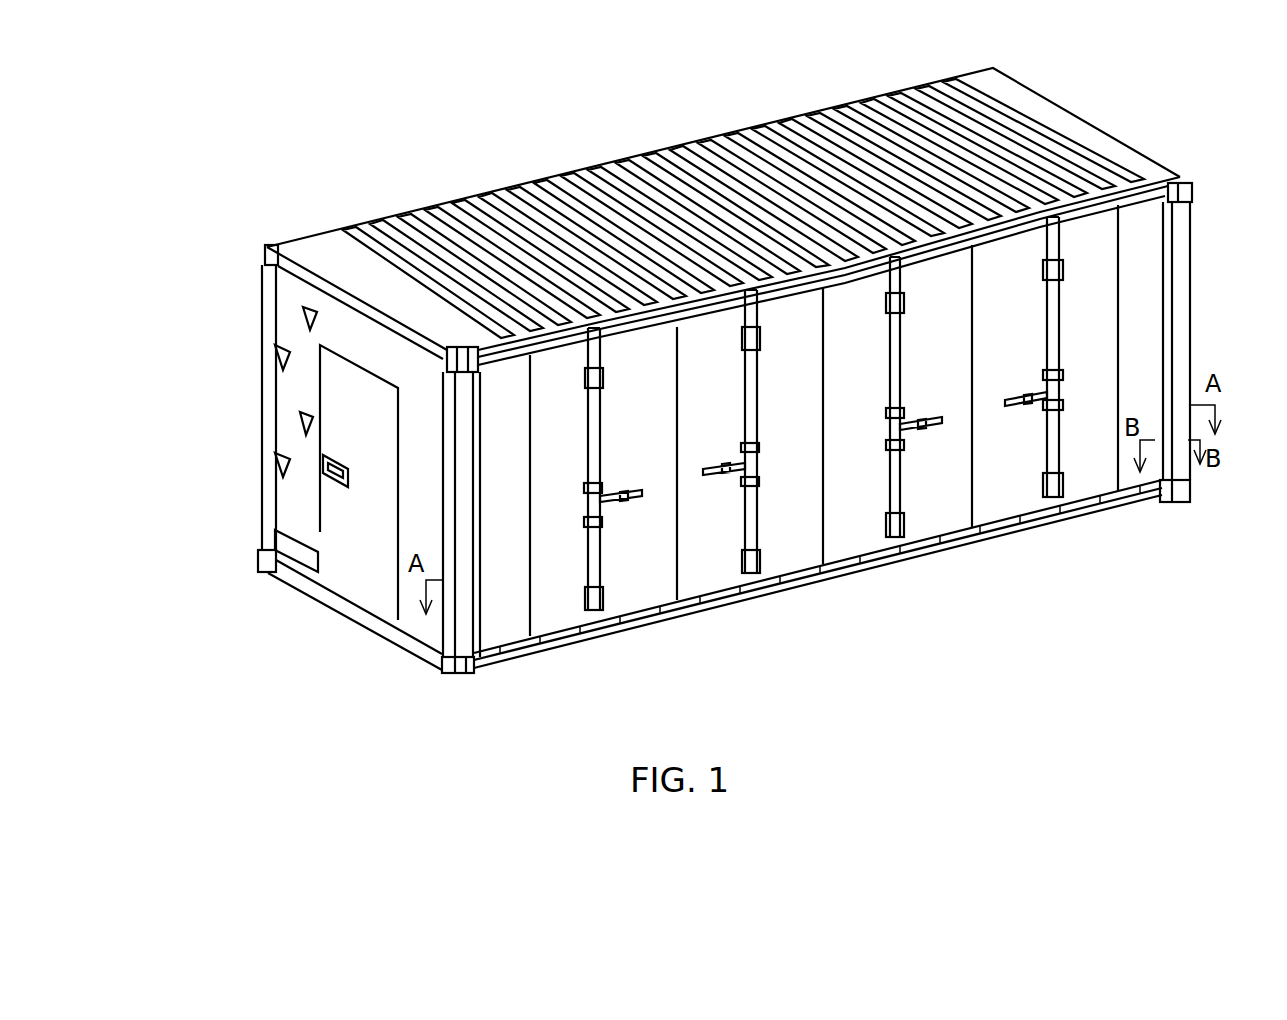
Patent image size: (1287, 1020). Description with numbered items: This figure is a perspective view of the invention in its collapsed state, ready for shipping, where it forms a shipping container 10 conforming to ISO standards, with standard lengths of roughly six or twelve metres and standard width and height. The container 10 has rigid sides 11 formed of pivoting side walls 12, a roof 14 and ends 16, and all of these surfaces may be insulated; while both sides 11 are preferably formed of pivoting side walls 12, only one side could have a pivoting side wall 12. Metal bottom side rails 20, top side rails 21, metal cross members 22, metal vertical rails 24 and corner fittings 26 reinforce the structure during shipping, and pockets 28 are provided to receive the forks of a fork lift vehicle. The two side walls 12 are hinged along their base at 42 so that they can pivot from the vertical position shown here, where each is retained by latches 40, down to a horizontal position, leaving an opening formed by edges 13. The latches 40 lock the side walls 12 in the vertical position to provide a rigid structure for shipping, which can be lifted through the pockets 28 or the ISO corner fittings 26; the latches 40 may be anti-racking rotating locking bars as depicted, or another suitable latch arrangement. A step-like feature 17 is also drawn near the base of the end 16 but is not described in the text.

The shipping container 10 is at (221, 175).
The sides 11 is at (1150, 312).
The side walls 12 is at (948, 492).
The edges 13 is at (477, 613).
The roof 14 is at (540, 215).
The ends 16 is at (292, 404).
The door sill step 17 is at (356, 568).
The bottom side rails 20 is at (1090, 505).
The top side rails 21 is at (698, 310).
The cross members 22 is at (312, 277).
The vertical rails 24 is at (265, 334).
The corner fittings 26 is at (265, 251).
The pockets 28 is at (780, 581).
The latches 40 is at (600, 432).
The hinge 42 is at (628, 612).